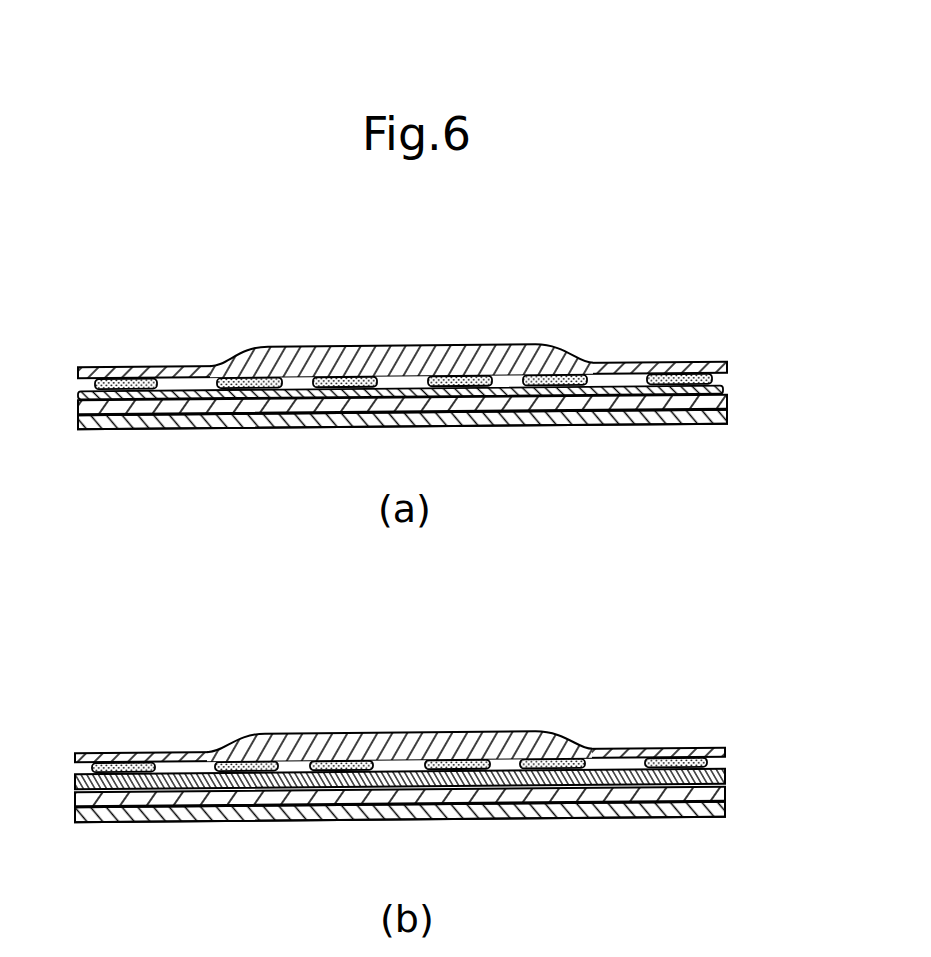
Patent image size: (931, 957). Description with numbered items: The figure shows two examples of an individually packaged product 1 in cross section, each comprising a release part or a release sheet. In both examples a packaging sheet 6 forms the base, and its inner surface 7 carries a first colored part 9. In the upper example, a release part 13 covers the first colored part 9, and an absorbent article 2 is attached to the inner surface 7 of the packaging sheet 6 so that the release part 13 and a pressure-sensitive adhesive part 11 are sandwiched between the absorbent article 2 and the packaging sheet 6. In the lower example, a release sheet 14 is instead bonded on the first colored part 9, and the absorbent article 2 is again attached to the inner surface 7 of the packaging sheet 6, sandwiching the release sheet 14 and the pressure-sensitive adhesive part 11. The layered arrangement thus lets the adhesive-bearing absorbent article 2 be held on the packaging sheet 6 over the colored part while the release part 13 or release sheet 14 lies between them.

The individually packaged product 1 is at (130, 325).
The absorbent article 2 is at (577, 355).
The packaging sheet 6 is at (712, 423).
The inner surface 7 is at (108, 420).
The first colored part 9 is at (722, 405).
The pressure-sensitive adhesive part 11 is at (690, 376).
The release part 13 is at (725, 390).
The release sheet 14 is at (725, 775).